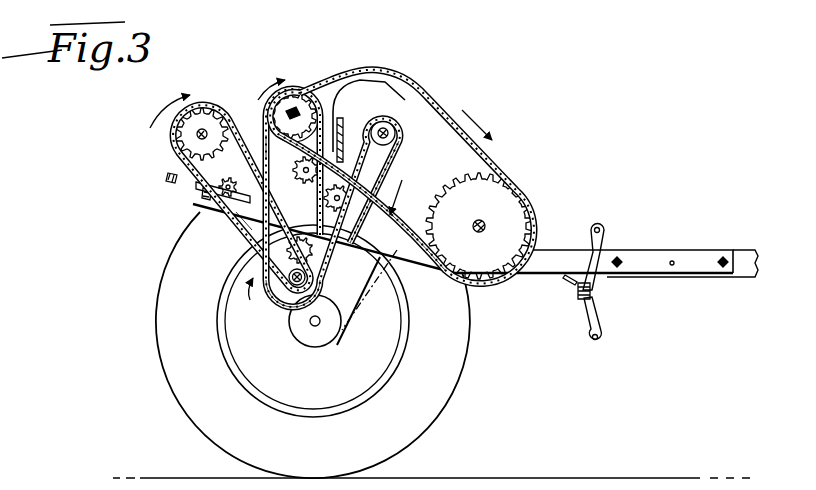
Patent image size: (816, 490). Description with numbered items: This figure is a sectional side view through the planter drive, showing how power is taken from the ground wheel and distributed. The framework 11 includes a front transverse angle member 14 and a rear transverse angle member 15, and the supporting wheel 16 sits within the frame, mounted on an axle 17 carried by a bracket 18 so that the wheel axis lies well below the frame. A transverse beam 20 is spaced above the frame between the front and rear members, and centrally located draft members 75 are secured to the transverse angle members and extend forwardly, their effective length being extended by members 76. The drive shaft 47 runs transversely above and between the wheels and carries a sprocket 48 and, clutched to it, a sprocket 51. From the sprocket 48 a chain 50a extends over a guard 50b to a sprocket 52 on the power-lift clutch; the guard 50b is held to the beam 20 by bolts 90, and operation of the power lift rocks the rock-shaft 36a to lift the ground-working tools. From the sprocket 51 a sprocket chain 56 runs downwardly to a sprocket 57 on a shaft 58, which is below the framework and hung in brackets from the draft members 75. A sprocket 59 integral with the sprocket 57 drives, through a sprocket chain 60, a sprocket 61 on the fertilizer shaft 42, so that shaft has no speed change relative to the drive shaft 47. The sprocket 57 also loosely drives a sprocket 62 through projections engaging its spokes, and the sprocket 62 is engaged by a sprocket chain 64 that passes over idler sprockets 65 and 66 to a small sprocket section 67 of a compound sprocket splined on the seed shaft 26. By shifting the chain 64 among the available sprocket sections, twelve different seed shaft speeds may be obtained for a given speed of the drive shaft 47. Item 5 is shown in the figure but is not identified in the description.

The swing arm 5 is at (373, 338).
The framework 11 is at (190, 212).
The front transverse angle member 14 is at (568, 280).
The rear transverse angle member 15 is at (193, 205).
The supporting wheel 16 is at (160, 294).
The axle 17 is at (317, 325).
The bracket 18 is at (298, 329).
The transverse beam 20 is at (331, 150).
The seed shaft 26 is at (397, 129).
The rock-shaft 36a is at (166, 180).
The fertilizer shaft 42 is at (197, 135).
The transverse shaft 47 is at (264, 124).
The sprocket 48 is at (291, 106).
The chain 50a is at (333, 77).
The guard 50b is at (367, 82).
The sprocket 51 is at (303, 154).
The sprocket 52 is at (497, 200).
The sprocket chain 56 is at (262, 150).
The sprocket 57 is at (285, 294).
The shaft 58 is at (321, 302).
The sprocket 59 is at (301, 243).
The sprocket chain 60 is at (250, 214).
The sprocket 61 is at (180, 144).
The sprocket 62 is at (315, 277).
The sprocket chain 64 is at (347, 230).
The idler sprocket 65 is at (330, 198).
The idler sprocket 66 is at (347, 228).
The small sprocket section 67 is at (373, 136).
The draft member 75 is at (647, 250).
The member 76 is at (740, 268).
The bolt 90 is at (341, 140).